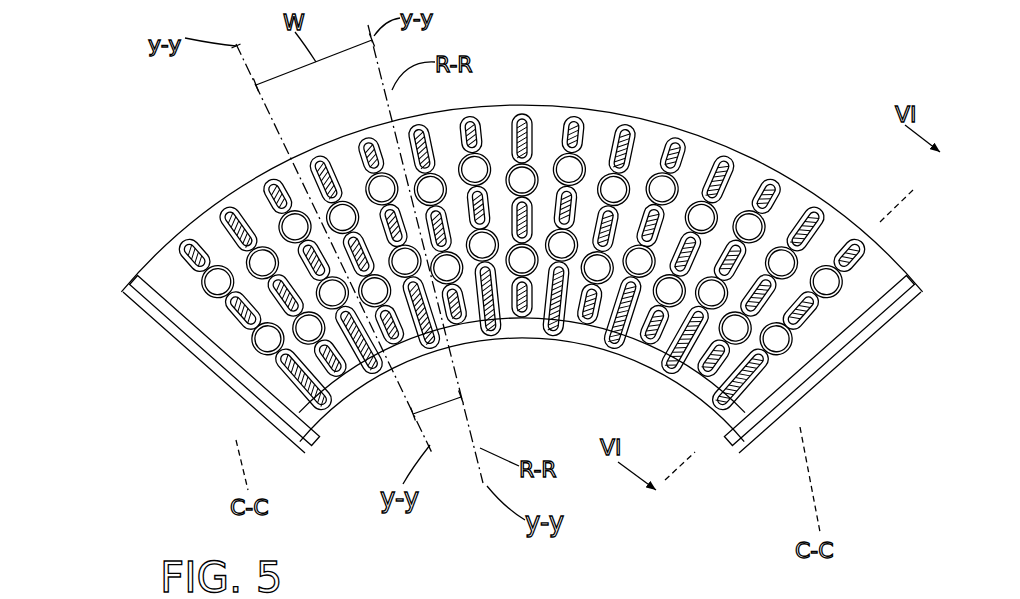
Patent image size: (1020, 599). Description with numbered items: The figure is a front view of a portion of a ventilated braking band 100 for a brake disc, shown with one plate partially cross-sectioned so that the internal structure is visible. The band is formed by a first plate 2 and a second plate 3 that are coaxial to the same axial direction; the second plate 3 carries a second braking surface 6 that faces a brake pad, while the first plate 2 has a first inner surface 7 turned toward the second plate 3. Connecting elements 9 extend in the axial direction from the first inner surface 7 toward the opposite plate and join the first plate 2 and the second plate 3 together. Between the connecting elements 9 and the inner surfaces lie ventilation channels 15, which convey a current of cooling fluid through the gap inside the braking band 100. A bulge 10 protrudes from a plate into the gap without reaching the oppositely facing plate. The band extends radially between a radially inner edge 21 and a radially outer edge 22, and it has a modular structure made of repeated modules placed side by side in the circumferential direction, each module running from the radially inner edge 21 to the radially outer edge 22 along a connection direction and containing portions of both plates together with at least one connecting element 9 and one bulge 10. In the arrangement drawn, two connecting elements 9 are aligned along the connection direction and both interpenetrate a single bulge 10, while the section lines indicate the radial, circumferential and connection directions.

The ventilated braking band 100 is at (502, 271).
The first plate 2 is at (510, 108).
The second plate 3 is at (122, 294).
The second braking surface 6 is at (190, 352).
The first inner surface 7 is at (749, 171).
The connecting element 9 is at (352, 132).
The bulge 10 is at (250, 200).
The ventilation channel 15 is at (558, 126).
The radially inner edge 21 is at (552, 345).
The radially outer edge 22 is at (688, 140).